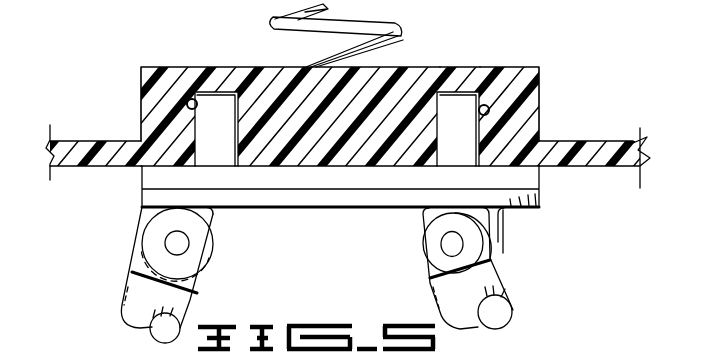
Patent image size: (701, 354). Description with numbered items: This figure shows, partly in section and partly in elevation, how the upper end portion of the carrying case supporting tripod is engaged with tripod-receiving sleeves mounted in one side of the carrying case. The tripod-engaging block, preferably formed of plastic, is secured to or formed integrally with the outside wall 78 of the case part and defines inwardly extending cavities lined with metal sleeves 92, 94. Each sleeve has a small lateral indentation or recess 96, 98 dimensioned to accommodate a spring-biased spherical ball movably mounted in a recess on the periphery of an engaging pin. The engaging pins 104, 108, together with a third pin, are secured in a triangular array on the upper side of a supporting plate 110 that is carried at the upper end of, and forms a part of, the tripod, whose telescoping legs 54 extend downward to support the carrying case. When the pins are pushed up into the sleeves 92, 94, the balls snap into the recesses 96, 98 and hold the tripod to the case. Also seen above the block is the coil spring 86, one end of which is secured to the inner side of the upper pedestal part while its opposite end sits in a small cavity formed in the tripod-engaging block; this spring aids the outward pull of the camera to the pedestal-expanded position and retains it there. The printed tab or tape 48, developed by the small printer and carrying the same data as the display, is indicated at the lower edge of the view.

The printed tab or tape 48 is at (533, 353).
The telescoping legs 54 is at (508, 268).
The outside wall 78 is at (62, 143).
The coil spring 86 is at (390, 25).
The metal sleeve 92 is at (228, 91).
The metal sleeve 94 is at (458, 67).
The lateral indentation or recess 96 is at (190, 99).
The lateral indentation or recess 98 is at (488, 108).
The engaging pin 104 is at (216, 129).
The engaging pin 108 is at (458, 129).
The supporting plate 110 is at (150, 177).